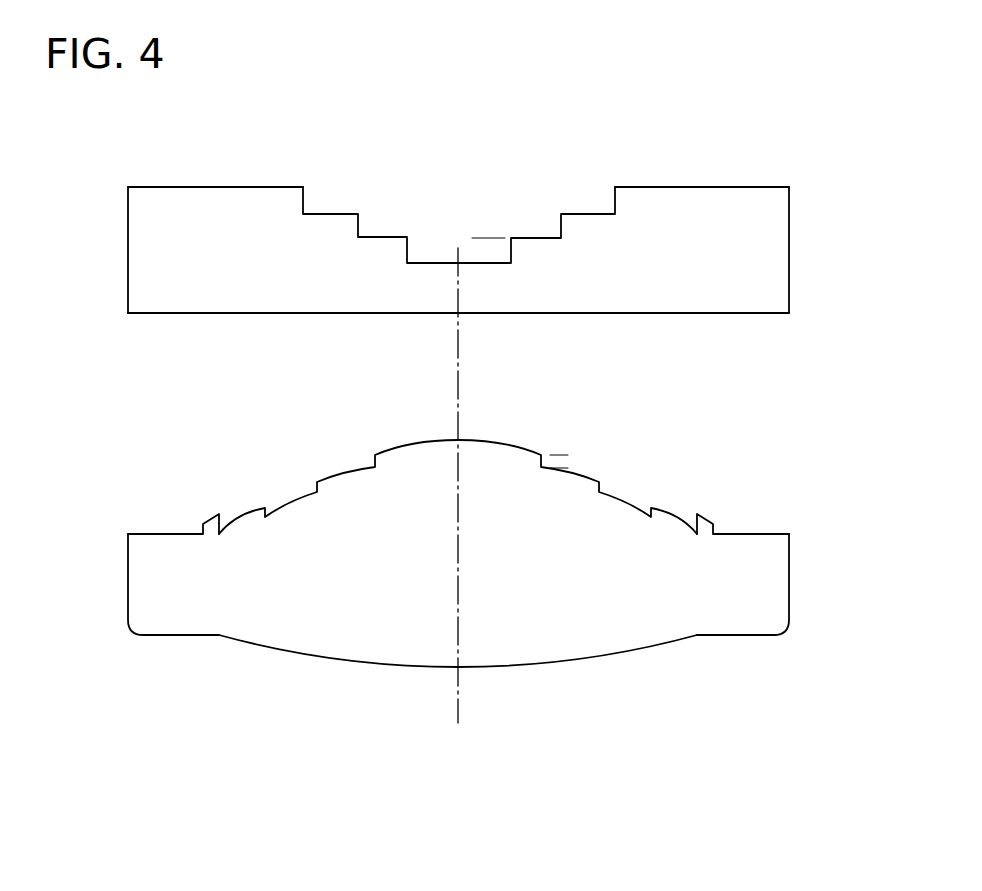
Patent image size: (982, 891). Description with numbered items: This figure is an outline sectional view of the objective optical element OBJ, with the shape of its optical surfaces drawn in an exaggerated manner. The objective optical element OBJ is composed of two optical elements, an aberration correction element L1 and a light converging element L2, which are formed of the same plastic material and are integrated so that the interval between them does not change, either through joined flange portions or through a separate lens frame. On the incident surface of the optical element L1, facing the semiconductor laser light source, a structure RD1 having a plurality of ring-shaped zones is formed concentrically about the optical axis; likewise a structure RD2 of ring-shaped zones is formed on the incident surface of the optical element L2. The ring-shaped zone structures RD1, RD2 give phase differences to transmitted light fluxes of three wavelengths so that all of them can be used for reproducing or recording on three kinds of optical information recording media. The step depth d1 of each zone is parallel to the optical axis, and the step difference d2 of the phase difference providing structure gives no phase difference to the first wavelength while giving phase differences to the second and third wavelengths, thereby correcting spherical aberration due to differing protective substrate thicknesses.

The objective optical element OBJ is at (67, 215).
The optical element L1 is at (488, 251).
The optical element L2 is at (488, 573).
The structure having a plurality of ring-shaped zones RD1 is at (573, 178).
The structure having a plurality of ring-shaped zones RD2 is at (632, 460).
The step depth d1 is at (559, 493).
The step difference d2 is at (489, 287).